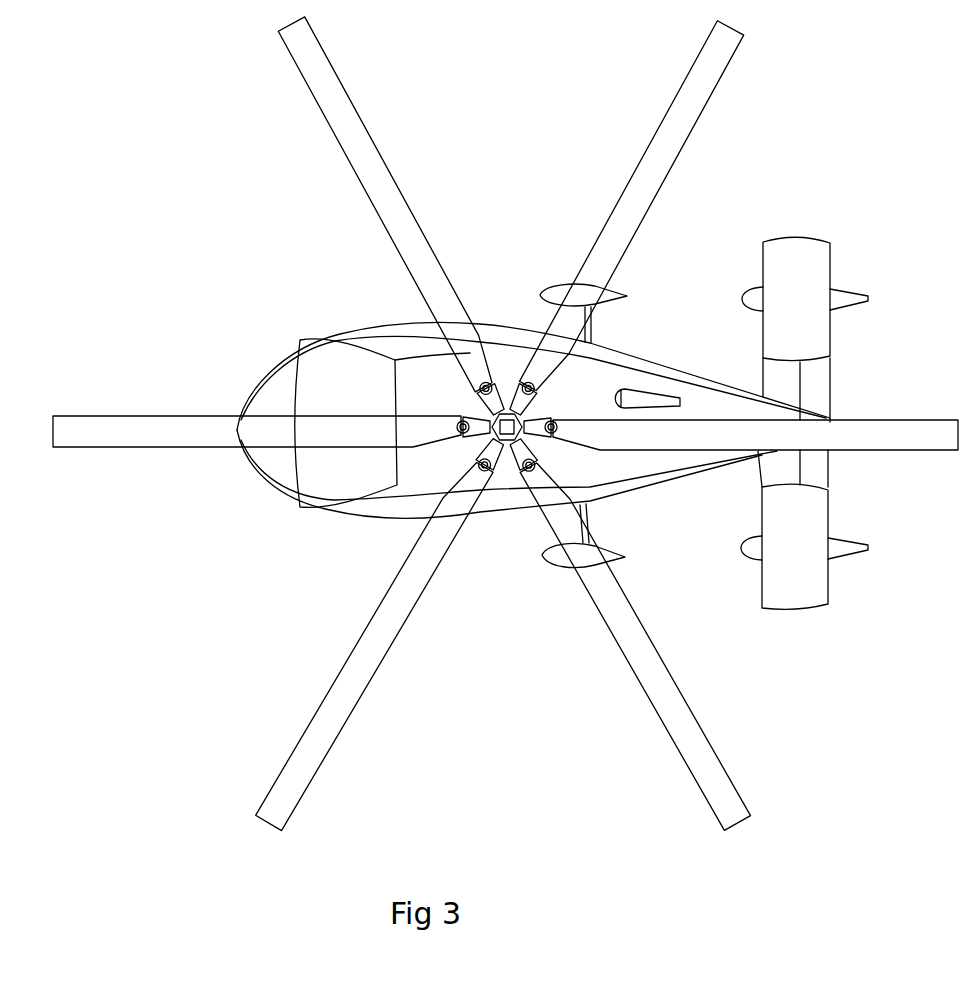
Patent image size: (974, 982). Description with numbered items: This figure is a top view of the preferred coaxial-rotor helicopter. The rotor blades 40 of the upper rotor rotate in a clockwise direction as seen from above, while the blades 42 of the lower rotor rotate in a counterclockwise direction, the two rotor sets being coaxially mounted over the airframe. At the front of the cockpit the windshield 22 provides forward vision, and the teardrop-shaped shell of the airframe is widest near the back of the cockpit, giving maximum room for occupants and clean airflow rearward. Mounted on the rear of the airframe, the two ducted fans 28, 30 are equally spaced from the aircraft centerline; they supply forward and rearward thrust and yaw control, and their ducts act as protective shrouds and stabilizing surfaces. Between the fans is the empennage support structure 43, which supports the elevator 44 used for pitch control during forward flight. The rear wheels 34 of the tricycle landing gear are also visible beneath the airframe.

The windshield 22 is at (322, 388).
The ducted fan 28 is at (822, 593).
The ducted fan 30 is at (822, 261).
The rear wheels 34 is at (620, 287).
The rotor blades 40 is at (115, 443).
The blades 42 is at (372, 178).
The empennage support structure 43 is at (763, 377).
The elevator 44 is at (824, 382).